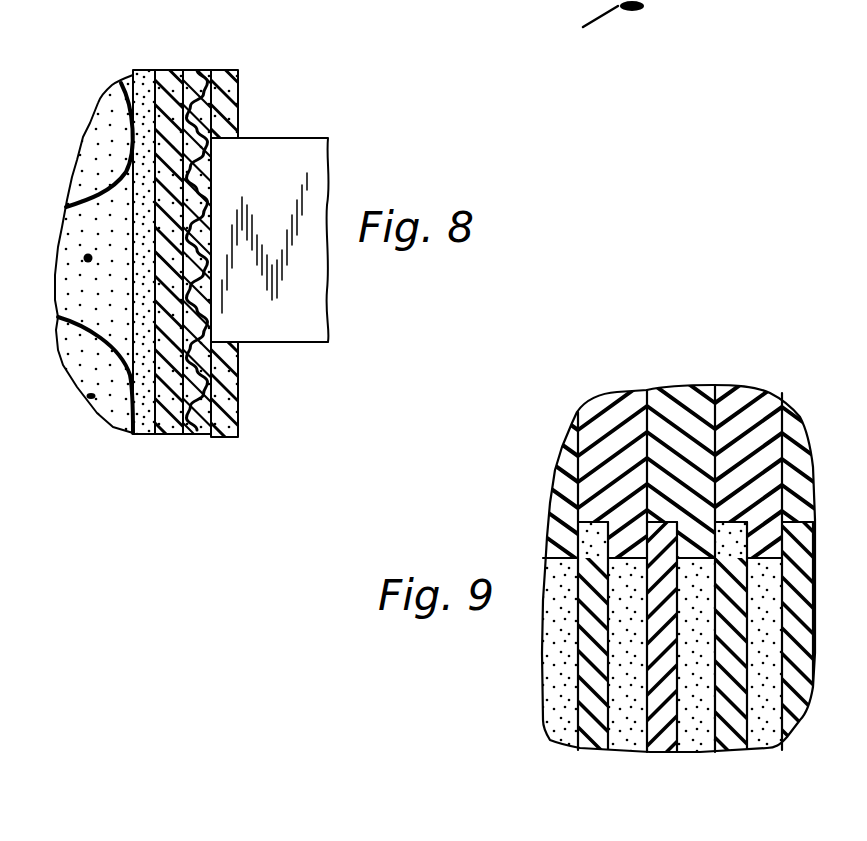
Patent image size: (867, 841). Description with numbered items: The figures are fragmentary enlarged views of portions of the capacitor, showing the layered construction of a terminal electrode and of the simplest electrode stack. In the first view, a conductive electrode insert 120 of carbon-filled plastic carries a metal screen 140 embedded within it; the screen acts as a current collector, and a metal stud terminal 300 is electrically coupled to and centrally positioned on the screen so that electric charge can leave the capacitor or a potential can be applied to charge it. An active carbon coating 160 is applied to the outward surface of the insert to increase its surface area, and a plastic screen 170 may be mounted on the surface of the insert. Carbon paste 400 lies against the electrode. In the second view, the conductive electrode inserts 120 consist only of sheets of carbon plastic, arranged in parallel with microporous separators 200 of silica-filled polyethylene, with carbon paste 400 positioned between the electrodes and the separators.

In FIG. 8, the conductive electrode insert 120 is at (238, 100).
In FIG. 9, the conductive electrode insert 120 is at (583, 533).
In FIG. 8, the metal screen 140 is at (197, 71).
In FIG. 8, the carbon coating 160 is at (145, 72).
In FIG. 8, the plastic screen 170 is at (119, 157).
In FIG. 9, the microporous separator 200 is at (658, 735).
In FIG. 8, the metal stud terminal 300 is at (315, 157).
In FIG. 8, the carbon paste 400 is at (109, 402).
In FIG. 9, the carbon paste 400 is at (625, 733).